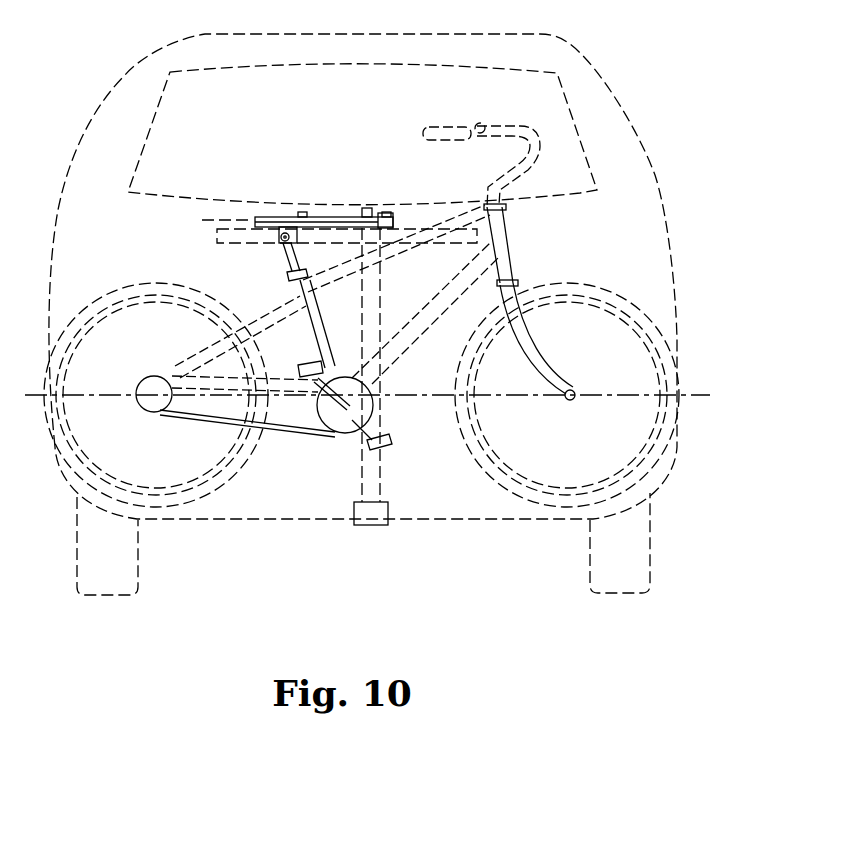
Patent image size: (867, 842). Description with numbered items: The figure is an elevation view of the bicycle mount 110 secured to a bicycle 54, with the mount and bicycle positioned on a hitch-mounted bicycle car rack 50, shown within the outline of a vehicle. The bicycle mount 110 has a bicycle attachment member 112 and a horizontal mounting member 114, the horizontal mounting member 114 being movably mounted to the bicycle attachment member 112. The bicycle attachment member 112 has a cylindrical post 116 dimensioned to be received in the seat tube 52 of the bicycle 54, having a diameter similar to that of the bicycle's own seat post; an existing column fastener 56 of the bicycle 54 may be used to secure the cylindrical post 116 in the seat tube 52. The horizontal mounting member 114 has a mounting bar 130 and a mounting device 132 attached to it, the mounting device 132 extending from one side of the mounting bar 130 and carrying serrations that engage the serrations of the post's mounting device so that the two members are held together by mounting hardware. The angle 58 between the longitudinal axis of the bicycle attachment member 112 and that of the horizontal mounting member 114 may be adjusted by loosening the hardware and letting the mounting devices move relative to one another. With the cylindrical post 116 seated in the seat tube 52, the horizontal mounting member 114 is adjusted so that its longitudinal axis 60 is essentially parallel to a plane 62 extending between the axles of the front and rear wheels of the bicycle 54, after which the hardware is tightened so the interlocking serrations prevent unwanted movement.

The bicycle car rack 50 is at (361, 315).
The seat tube 52 is at (305, 340).
The bicycle 54 is at (595, 229).
The column fastener 56 is at (344, 238).
The angle 58 is at (312, 268).
The longitudinal axis 60 is at (237, 220).
The plane 62 is at (707, 393).
The bicycle mount 110 is at (300, 313).
The bicycle attachment member 112 is at (268, 266).
The horizontal mounting member 114 is at (367, 194).
The cylindrical post 116 is at (278, 262).
The mounting bar 130 is at (392, 216).
The mounting device 132 is at (284, 233).